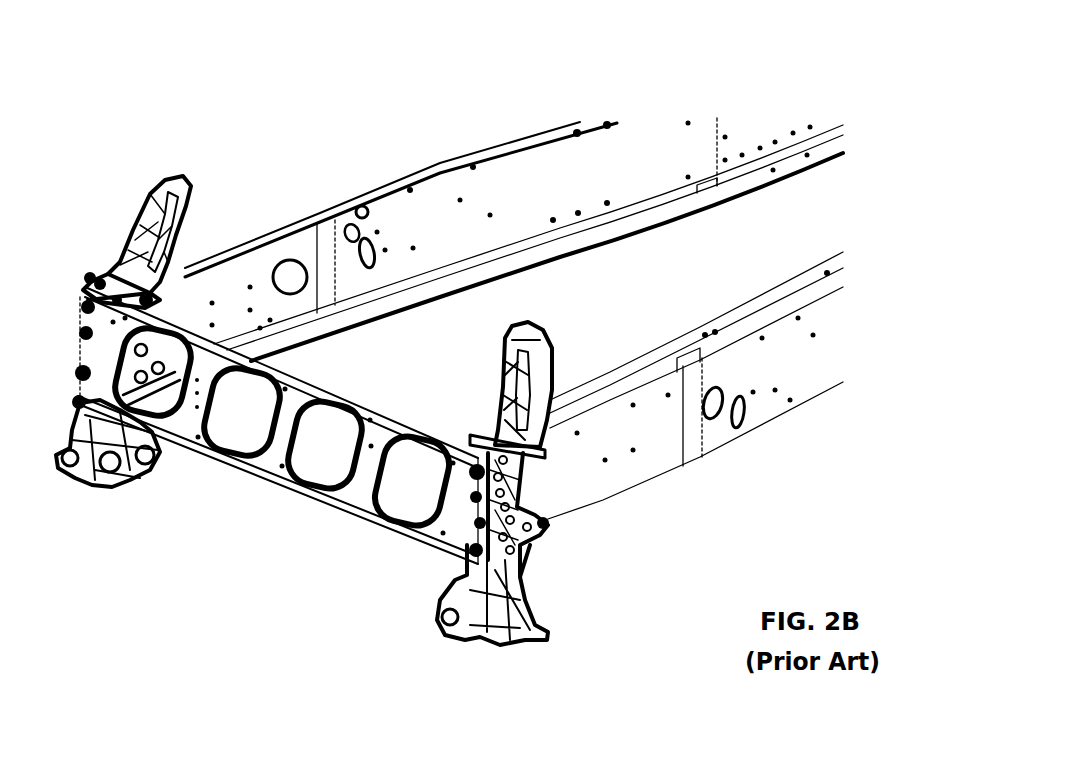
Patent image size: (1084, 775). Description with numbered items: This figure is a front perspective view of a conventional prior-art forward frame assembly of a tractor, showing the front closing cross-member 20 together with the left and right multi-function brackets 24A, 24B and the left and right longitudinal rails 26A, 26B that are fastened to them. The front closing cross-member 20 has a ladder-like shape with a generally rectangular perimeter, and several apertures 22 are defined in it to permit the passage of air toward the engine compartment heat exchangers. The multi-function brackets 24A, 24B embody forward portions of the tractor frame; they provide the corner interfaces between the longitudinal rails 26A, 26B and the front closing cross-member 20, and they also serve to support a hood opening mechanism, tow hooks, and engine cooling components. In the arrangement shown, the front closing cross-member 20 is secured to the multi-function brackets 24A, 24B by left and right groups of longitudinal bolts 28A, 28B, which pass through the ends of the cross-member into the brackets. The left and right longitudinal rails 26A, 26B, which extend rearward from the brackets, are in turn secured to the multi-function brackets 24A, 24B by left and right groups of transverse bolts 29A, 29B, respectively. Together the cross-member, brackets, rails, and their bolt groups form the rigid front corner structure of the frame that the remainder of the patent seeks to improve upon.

The front closing cross-member 20 is at (355, 503).
The apertures 22 is at (245, 428).
The left multi-function bracket 24A is at (428, 660).
The right multi-function bracket 24B is at (48, 497).
The left longitudinal rail 26A is at (650, 440).
The right longitudinal rail 26B is at (430, 190).
The left group of longitudinal bolts 28A is at (475, 467).
The right group of longitudinal bolts 28B is at (84, 302).
The left group of transverse bolts 29A is at (547, 526).
The right group of transverse bolts 29B is at (151, 296).